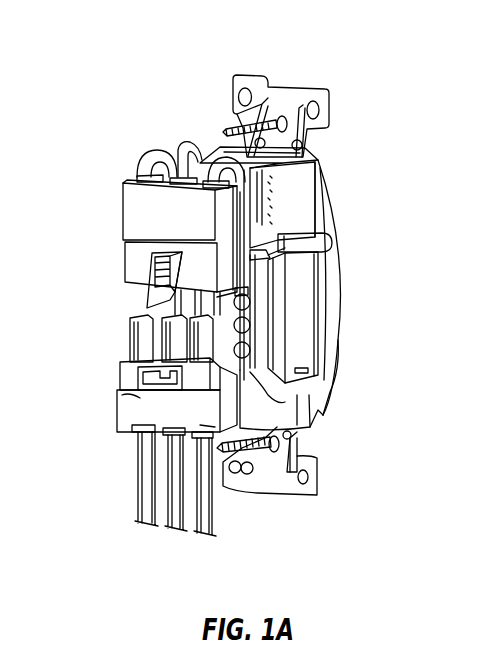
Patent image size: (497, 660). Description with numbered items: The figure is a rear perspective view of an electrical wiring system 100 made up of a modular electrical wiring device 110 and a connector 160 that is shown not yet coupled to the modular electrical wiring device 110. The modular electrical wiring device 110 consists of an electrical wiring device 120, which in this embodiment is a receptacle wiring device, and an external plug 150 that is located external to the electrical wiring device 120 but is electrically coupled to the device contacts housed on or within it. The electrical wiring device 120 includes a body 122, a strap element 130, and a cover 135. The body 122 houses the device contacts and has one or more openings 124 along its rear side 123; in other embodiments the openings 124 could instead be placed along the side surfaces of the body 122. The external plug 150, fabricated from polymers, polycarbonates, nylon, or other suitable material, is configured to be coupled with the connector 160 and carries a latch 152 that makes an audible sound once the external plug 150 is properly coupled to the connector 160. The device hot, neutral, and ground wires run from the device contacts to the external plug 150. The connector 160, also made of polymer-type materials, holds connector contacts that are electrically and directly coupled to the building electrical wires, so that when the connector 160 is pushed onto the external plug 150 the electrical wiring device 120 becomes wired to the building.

The electrical wiring system 100 is at (126, 57).
The modular electrical wiring device 110 is at (362, 291).
The electrical wiring device 120 is at (315, 225).
The body 122 is at (290, 200).
The rear side 123 is at (248, 407).
The openings 124 is at (247, 297).
The strap element 130 is at (273, 105).
The cover 135 is at (333, 378).
The external plug 150 is at (137, 210).
The latch 152 is at (140, 293).
The connector 160 is at (130, 403).